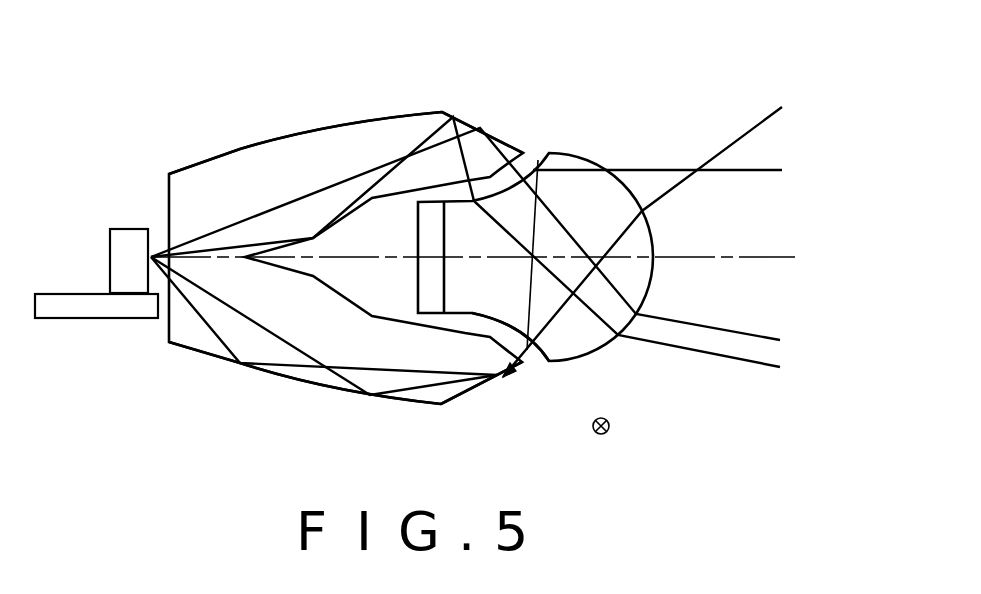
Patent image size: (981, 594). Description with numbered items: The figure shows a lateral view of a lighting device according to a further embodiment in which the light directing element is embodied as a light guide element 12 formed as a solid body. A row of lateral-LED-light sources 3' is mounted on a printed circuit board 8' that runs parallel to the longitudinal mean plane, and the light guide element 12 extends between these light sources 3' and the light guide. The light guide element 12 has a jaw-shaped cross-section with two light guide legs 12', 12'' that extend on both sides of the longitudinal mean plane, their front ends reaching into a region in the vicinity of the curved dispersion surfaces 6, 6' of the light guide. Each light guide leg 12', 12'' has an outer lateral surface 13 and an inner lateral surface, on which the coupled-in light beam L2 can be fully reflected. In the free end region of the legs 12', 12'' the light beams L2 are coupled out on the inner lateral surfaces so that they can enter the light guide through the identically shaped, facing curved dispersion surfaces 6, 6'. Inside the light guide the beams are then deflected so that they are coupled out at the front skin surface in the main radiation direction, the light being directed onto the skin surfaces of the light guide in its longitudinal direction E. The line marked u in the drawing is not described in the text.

The light guide element 12 is at (346, 211).
The light guide leg 12' is at (305, 127).
The light guide leg 12'' is at (305, 401).
The outer lateral surface 13 is at (418, 110).
The curved dispersion surface 6 is at (535, 224).
The curved dispersion surface 6' is at (507, 390).
The lateral-LED-light source 3' is at (103, 253).
The printed circuit board 8' is at (93, 334).
The light beam L2 is at (765, 170).
The optical axis u is at (757, 257).
The longitudinal direction E is at (609, 433).